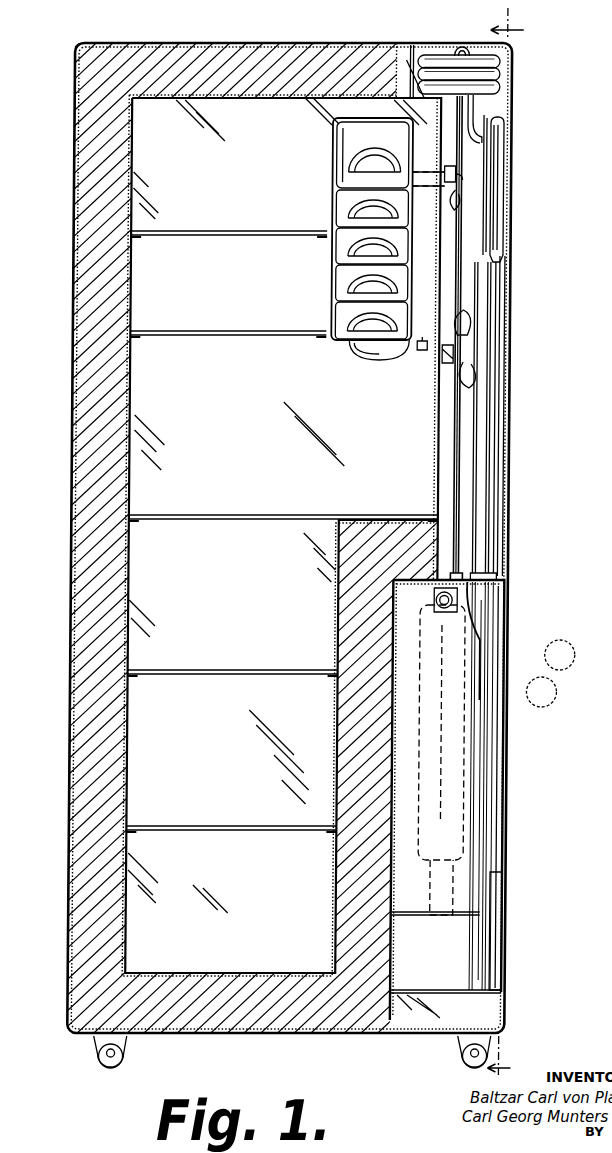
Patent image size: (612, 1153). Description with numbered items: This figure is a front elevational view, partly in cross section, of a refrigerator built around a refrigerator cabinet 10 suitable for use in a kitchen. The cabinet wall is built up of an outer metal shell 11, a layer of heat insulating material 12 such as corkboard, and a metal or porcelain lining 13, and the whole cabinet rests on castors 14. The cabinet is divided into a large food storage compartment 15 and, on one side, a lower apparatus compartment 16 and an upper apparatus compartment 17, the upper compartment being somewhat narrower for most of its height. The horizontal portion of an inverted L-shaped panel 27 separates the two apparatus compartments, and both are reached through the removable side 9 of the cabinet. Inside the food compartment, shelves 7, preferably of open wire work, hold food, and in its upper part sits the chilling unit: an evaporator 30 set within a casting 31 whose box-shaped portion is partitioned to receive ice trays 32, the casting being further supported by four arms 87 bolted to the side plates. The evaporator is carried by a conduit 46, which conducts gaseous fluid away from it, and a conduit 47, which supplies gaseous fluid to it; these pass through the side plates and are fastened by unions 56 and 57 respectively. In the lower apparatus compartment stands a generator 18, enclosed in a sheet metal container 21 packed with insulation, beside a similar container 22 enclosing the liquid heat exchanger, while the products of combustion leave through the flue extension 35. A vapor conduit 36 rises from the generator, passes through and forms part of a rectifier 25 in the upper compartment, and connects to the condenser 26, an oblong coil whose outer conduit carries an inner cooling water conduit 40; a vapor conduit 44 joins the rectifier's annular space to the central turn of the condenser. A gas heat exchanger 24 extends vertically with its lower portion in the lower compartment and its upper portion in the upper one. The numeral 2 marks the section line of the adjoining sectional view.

The section line 2- 2 is at (505, 540).
The shelves 7 is at (238, 337).
The removable side 9 is at (513, 241).
The refrigerator cabinet 10 is at (76, 185).
The outer metal shell 11 is at (77, 242).
The heat insulating material 12 is at (90, 270).
The lining 13 is at (130, 303).
The castors 14 is at (108, 1058).
The food storage compartment 15 is at (286, 557).
The lower apparatus compartment 16 is at (508, 736).
The upper apparatus compartment 17 is at (506, 475).
The generator 18 is at (452, 700).
The sheet metal container 21 is at (506, 823).
The sheet metal container 22 is at (506, 875).
The gas heat exchanger 24 is at (458, 428).
The rectifier 25 is at (466, 178).
The condenser 26 is at (508, 81).
The inverted L-shaped panel 27 is at (462, 590).
The evaporator 30 is at (362, 353).
The casting 31 is at (334, 145).
The ice trays 32 is at (333, 255).
The flue extension 35 is at (474, 612).
The vapor conduit 36 is at (492, 353).
The inner cooling water conduit 40 is at (504, 54).
The vapor conduit 44 is at (476, 132).
The conduit 46 is at (466, 322).
The conduit 47 is at (506, 208).
The union 56 is at (476, 372).
The union 57 is at (489, 150).
The arms 87 is at (412, 46).